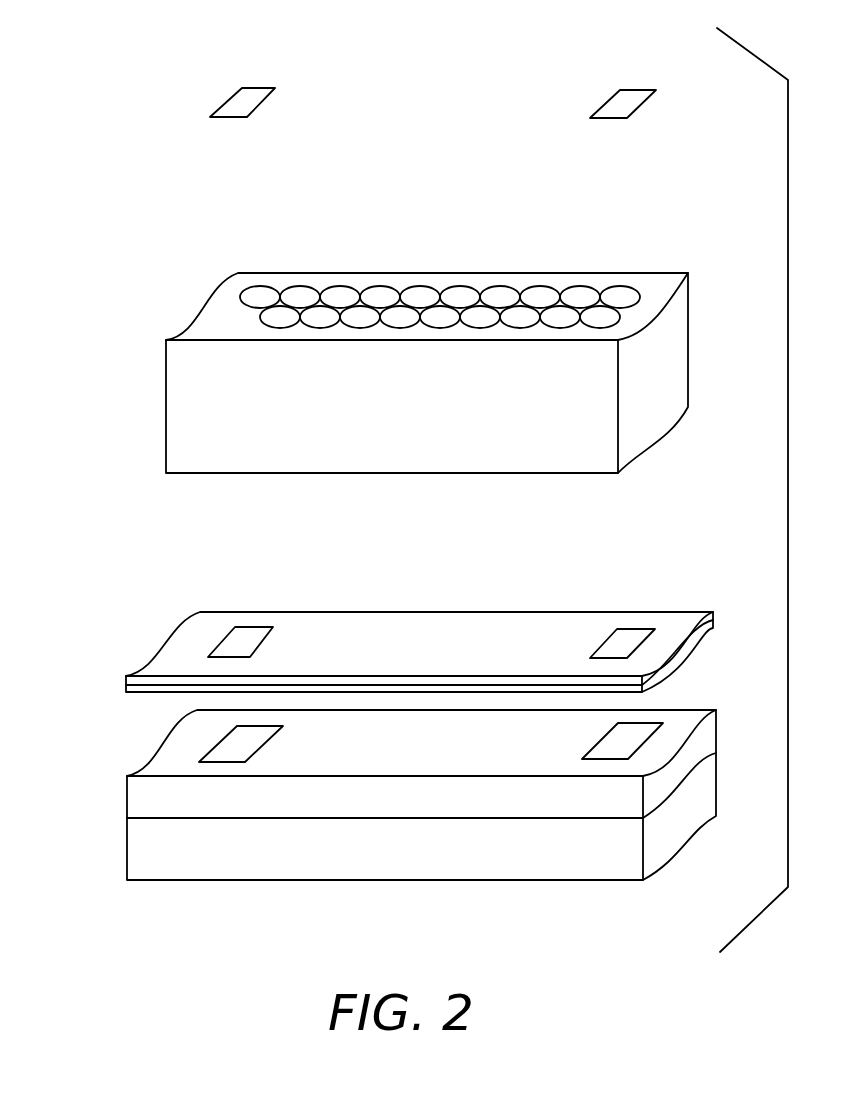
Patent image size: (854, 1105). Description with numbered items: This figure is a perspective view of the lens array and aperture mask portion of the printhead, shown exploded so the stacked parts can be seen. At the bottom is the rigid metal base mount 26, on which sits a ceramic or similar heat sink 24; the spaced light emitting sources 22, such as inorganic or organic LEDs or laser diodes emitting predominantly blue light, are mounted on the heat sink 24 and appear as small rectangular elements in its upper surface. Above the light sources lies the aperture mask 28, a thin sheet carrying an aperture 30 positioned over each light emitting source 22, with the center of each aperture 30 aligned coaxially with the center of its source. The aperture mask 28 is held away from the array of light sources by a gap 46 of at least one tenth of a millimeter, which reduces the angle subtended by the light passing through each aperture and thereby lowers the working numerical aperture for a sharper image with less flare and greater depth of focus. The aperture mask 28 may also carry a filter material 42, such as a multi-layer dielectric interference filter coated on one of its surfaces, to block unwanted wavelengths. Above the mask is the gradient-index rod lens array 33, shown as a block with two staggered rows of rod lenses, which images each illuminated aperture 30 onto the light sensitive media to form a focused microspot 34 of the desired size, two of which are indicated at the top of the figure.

The light emitting sources 22 is at (238, 752).
The heat sink 24 is at (378, 763).
The rigid metal base mount 26 is at (132, 857).
The aperture mask 28 is at (390, 618).
The aperture 30 is at (247, 632).
The gradient-index rod lens array 33 is at (160, 330).
The microspot 34 is at (243, 90).
The filter material 42 is at (126, 688).
The gap 46 is at (168, 705).